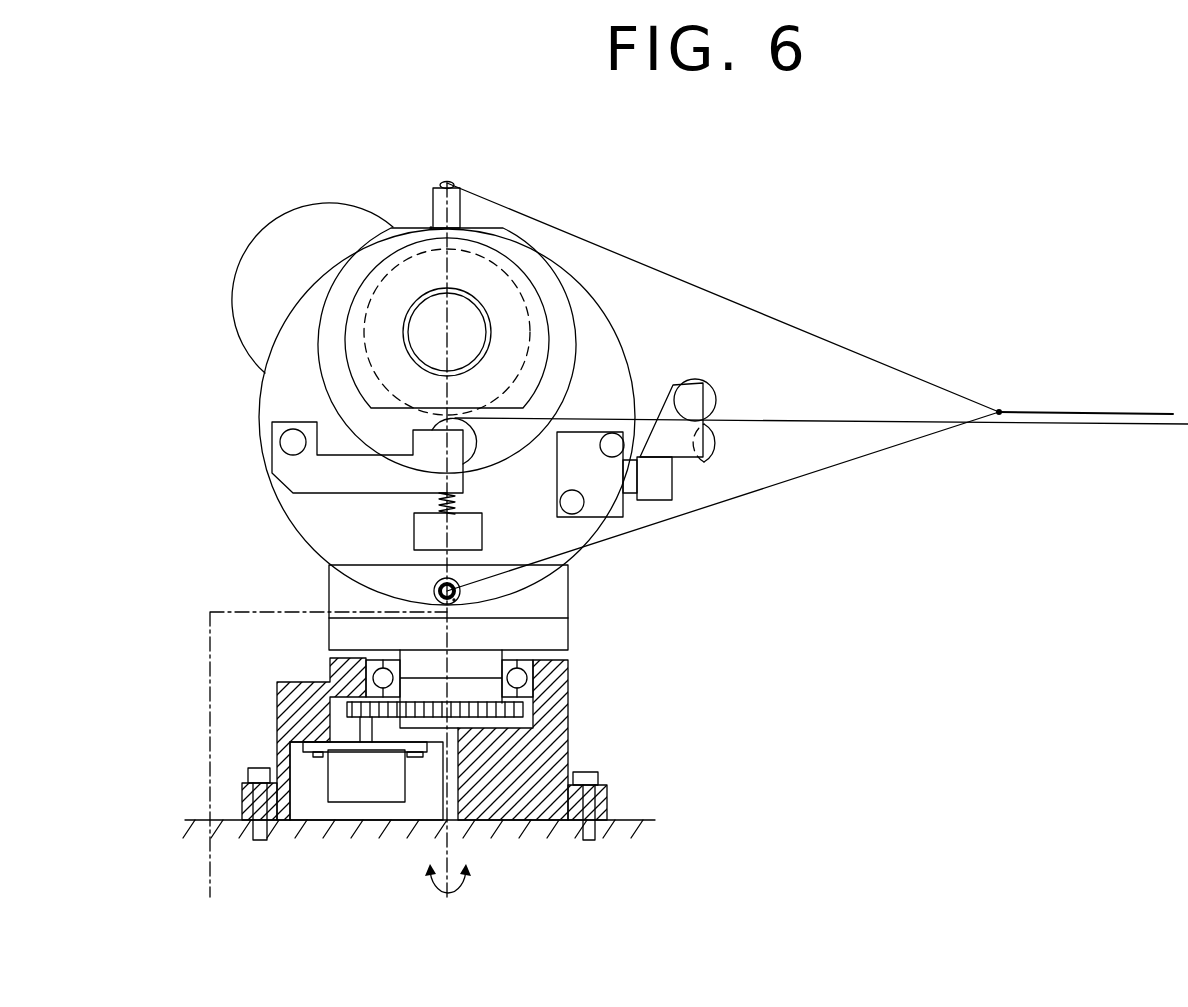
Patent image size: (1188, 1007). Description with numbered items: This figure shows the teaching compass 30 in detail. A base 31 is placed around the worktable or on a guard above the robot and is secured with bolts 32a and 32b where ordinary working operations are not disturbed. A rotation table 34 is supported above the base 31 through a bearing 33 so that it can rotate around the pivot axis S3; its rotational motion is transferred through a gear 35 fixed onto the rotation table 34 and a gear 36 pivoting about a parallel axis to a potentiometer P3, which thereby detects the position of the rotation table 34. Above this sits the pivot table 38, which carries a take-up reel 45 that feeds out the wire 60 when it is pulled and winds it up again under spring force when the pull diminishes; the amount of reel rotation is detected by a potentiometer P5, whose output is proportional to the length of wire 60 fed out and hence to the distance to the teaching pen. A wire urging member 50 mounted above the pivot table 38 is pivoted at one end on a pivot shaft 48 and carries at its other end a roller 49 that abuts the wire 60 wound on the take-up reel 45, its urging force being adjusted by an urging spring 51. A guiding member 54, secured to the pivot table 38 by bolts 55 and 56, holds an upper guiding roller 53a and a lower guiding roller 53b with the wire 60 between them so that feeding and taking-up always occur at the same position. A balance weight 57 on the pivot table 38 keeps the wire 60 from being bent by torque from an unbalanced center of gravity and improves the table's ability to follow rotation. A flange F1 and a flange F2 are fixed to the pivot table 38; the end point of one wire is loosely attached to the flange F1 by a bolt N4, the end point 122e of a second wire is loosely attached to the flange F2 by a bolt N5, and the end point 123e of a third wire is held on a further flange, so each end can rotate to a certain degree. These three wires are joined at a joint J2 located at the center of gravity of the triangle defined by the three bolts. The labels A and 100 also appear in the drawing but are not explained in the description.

The teaching compass 30 is at (722, 272).
The base 31 is at (530, 802).
The bolt 32a is at (257, 773).
The bolt 32b is at (592, 780).
The bearing 33 is at (530, 680).
The rotation table 34 is at (553, 645).
The gear 35 is at (535, 710).
The gear 36 is at (330, 700).
The pivot table 38 is at (607, 333).
The take-up reel 45 is at (507, 270).
The pivot shaft 48 is at (293, 440).
The roller 49 is at (463, 460).
The wire urging member 50 is at (290, 473).
The urging spring 51 is at (435, 500).
The upper guiding roller 53a is at (702, 392).
The lower guiding roller 53b is at (715, 447).
The guiding member 54 is at (660, 470).
The bolt 55 is at (615, 438).
The bolt 56 is at (574, 505).
The balance weight 57 is at (252, 272).
The wire 60 is at (995, 426).
The tape 100 is at (1130, 412).
The end point of wire 122e is at (437, 205).
The end point of wire 123e is at (460, 585).
The section line A is at (452, 175).
The flange F1 is at (432, 588).
The flange F2 is at (430, 228).
The joint J2 is at (1000, 410).
The bolt N4 is at (456, 600).
The bolt N5 is at (447, 180).
The potentiometer P3 is at (357, 790).
The potentiometer P5 is at (417, 331).
The pivot axis S3 is at (448, 900).